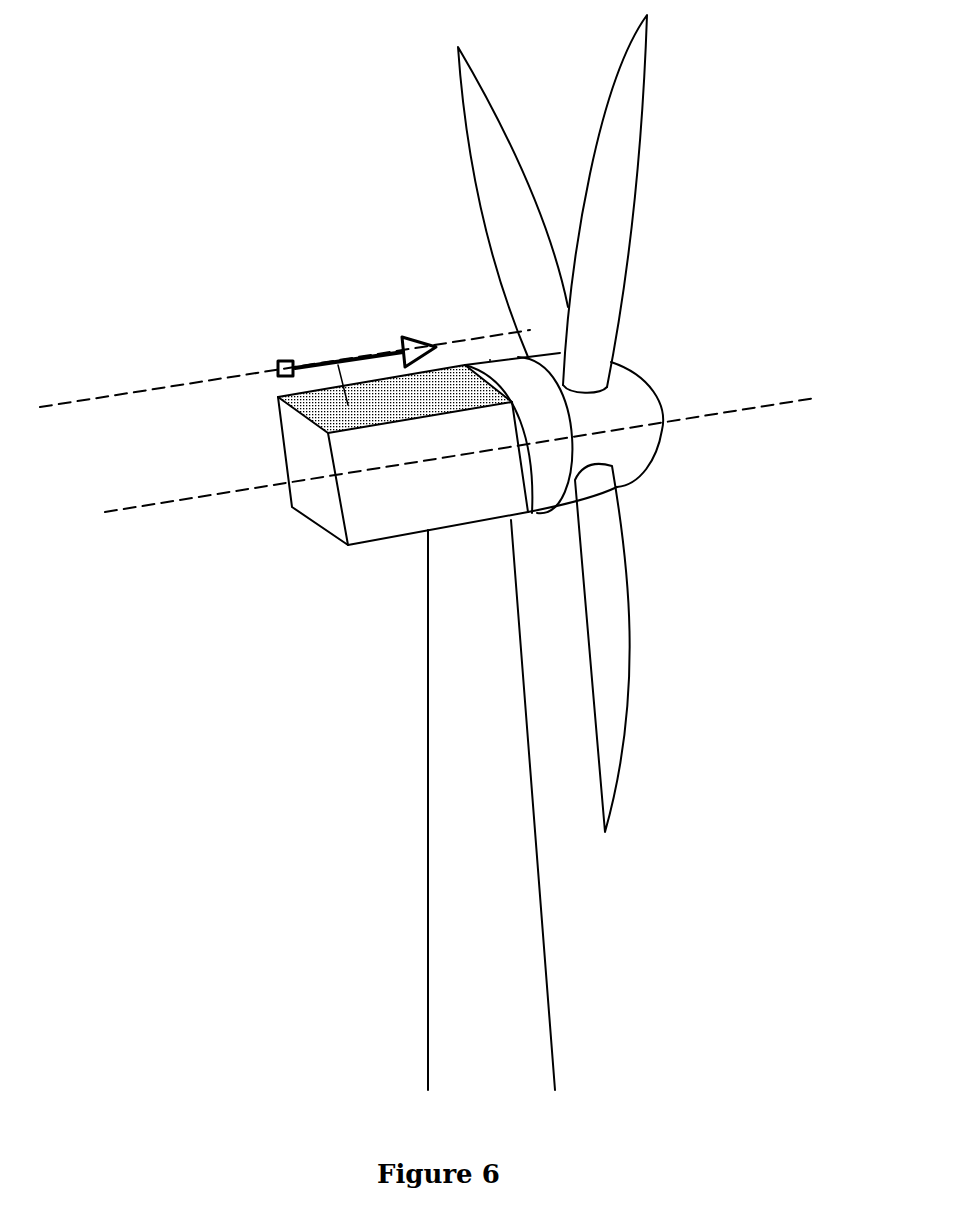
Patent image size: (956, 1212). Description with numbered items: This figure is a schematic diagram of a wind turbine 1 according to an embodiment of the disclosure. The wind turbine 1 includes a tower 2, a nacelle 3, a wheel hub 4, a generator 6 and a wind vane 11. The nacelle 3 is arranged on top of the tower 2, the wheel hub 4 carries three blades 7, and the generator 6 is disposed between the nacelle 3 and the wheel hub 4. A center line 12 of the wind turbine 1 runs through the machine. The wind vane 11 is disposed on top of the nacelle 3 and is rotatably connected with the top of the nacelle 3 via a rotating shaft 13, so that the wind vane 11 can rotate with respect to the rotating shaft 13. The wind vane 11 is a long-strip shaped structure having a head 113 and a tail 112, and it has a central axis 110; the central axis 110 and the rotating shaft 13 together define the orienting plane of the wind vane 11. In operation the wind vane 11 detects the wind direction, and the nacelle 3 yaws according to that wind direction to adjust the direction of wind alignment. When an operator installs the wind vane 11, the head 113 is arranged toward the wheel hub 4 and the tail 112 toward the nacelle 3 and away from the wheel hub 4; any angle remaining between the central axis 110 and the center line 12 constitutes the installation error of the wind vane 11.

The wind turbine 1 is at (220, 753).
The tower 2 is at (428, 782).
The nacelle 3 is at (313, 523).
The wheel hub 4 is at (650, 458).
The generator 6 is at (490, 358).
The blades 7 is at (635, 663).
The wind vane 11 is at (355, 350).
The center line 12 is at (767, 410).
The rotating shaft 13 is at (277, 393).
The central axis 110 is at (117, 393).
The tail 112 is at (275, 360).
The head 113 is at (418, 337).